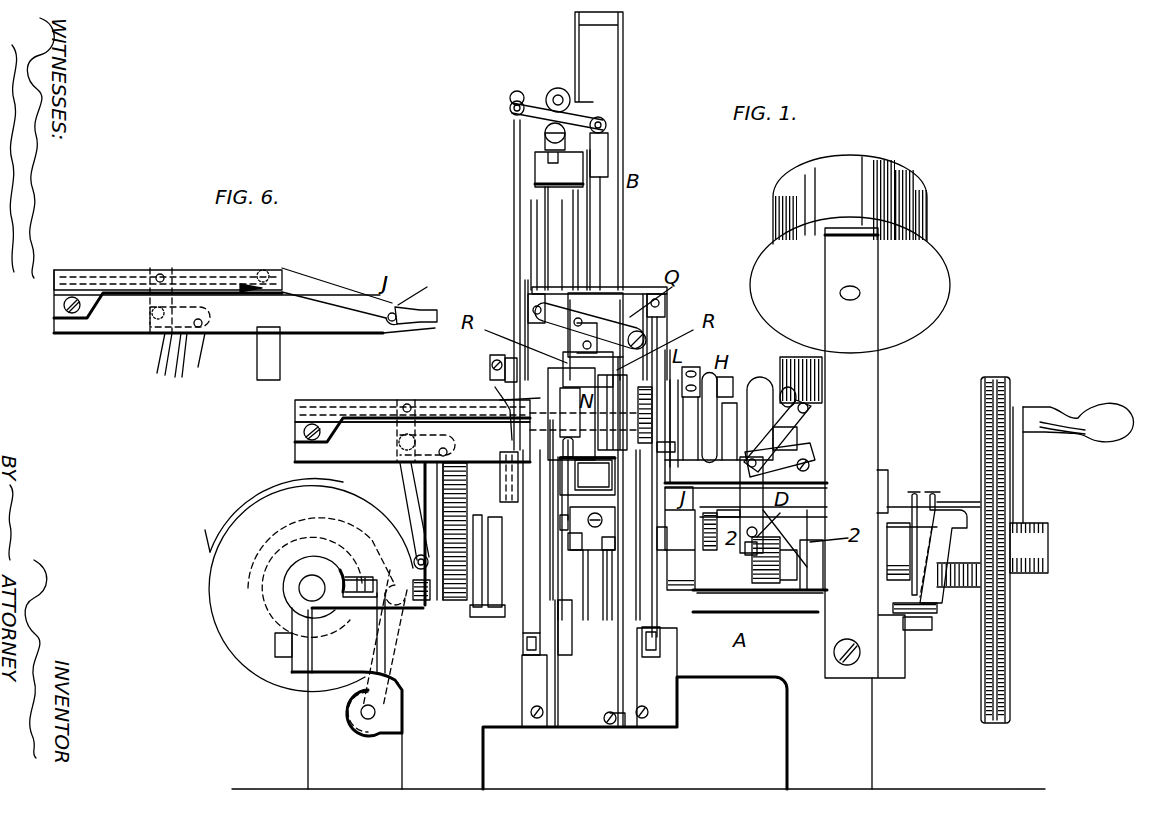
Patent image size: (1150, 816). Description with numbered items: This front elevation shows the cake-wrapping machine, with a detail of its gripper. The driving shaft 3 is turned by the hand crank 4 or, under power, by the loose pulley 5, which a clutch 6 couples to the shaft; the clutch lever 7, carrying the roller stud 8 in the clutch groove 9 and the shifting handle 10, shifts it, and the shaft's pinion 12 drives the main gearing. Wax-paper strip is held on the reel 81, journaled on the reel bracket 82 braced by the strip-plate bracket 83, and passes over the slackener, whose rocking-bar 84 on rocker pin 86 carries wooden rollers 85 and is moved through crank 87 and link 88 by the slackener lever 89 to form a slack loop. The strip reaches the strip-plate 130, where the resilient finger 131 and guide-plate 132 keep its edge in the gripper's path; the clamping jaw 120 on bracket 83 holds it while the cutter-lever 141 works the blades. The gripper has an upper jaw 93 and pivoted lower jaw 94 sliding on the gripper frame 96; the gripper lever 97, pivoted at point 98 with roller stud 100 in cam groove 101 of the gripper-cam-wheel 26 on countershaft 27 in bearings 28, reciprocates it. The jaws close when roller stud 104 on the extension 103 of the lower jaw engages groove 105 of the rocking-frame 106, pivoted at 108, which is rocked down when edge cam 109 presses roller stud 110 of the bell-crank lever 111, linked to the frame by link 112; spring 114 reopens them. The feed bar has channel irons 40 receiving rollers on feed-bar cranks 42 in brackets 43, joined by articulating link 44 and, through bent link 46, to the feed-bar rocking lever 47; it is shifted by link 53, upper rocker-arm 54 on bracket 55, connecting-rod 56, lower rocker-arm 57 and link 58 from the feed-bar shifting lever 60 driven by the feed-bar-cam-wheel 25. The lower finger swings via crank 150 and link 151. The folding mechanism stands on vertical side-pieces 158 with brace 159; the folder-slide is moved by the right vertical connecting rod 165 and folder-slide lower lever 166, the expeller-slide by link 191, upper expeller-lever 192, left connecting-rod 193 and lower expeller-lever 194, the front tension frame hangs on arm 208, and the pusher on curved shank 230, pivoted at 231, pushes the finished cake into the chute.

In FIG. 6, the rocking-frame 106 is at (117, 269).
In FIG. 1, the rocking-frame 106 is at (495, 399).
In FIG. 6, the groove 105 is at (193, 274).
In FIG. 6, the roller stud 104 is at (264, 268).
In FIG. 6, the integral extension 103 is at (312, 283).
In FIG. 6, the upper jaw 93 is at (428, 310).
In FIG. 1, the upper jaw 93 is at (428, 310).
In FIG. 6, the lower jaw 94 is at (409, 336).
In FIG. 1, the lower jaw 94 is at (418, 336).
In FIG. 6, the pivot 108 is at (64, 306).
In FIG. 1, the pivot 108 is at (304, 432).
In FIG. 6, the link 112 is at (160, 293).
In FIG. 1, the link 112 is at (407, 420).
In FIG. 6, the spring 114 is at (247, 288).
In FIG. 1, the spring 114 is at (507, 462).
In FIG. 6, the gripper frame 96 is at (215, 341).
In FIG. 1, the gripper frame 96 is at (435, 441).
In FIG. 6, the gripper lever 97 is at (173, 350).
In FIG. 1, the gripper lever 97 is at (372, 682).
In FIG. 6, the bell-crank lever 111 is at (197, 350).
In FIG. 1, the bell-crank lever 111 is at (380, 507).
In FIG. 1, the gripper-cam-wheel 26 is at (242, 570).
In FIG. 1, the edge cam 109 is at (267, 490).
In FIG. 1, the countershaft 27 is at (306, 590).
In FIG. 1, the bearings 28 is at (297, 600).
In FIG. 1, the cam groove 101 is at (297, 547).
In FIG. 1, the roller stud 100 is at (378, 555).
In FIG. 1, the pivot point 98 is at (361, 712).
In FIG. 1, the arm 208 is at (610, 413).
In FIG. 1, the feed-bar-cam-wheel 25 is at (430, 510).
In FIG. 1, the feed-bar shifting lever 60 is at (440, 588).
In FIG. 1, the roller stud 110 is at (470, 600).
In FIG. 1, the crank 150 is at (480, 575).
In FIG. 1, the feed-bar rocking lever 47 is at (512, 600).
In FIG. 1, the link 151 is at (458, 660).
In FIG. 1, the bracket 55 is at (575, 100).
In FIG. 1, the upper rocker-arm 54 is at (537, 107).
In FIG. 1, the brackets 43 is at (563, 147).
In FIG. 1, the feed-bar cranks 42 is at (537, 163).
In FIG. 1, the channel irons 40 is at (607, 160).
In FIG. 1, the articulating link 44 is at (548, 210).
In FIG. 1, the link 53 is at (597, 215).
In FIG. 1, the brace 159 is at (573, 288).
In FIG. 1, the connecting-rod 56 is at (518, 235).
In FIG. 1, the vertical side-pieces 158 is at (557, 297).
In FIG. 1, the upper expeller-lever 192 is at (587, 330).
In FIG. 1, the link 191 is at (583, 328).
In FIG. 1, the left connecting-rod 193 is at (570, 363).
In FIG. 1, the lower rocker-arm 57 is at (492, 363).
In FIG. 1, the link 58 is at (490, 360).
In FIG. 1, the bent link 46 is at (498, 387).
In FIG. 1, the cutter-lever 141 is at (553, 483).
In FIG. 1, the lower expeller-lever 194 is at (528, 642).
In FIG. 1, the curved pusher shank 230 is at (617, 640).
In FIG. 1, the pivot 231 is at (607, 717).
In FIG. 1, the right vertical connecting rod 165 is at (657, 593).
In FIG. 1, the folder-slide lower lever 166 is at (650, 647).
In FIG. 1, the clamping jaw 120 is at (680, 538).
In FIG. 1, the guide-plate 132 is at (694, 365).
In FIG. 1, the anti-friction rollers 85 is at (760, 380).
In FIG. 1, the strip-plate 130 is at (740, 337).
In FIG. 1, the finger 131 is at (800, 360).
In FIG. 1, the rocking-bar 84 is at (800, 418).
In FIG. 1, the strip-plate bracket 83 is at (925, 455).
In FIG. 1, the crank 87 is at (793, 447).
In FIG. 1, the rocker pin 86 is at (820, 470).
In FIG. 1, the link 88 is at (765, 510).
In FIG. 1, the pinion 12 is at (767, 570).
In FIG. 1, the slackener lever 89 is at (783, 540).
In FIG. 1, the driving shaft 3 is at (883, 547).
In FIG. 1, the reel bracket 82 is at (857, 368).
In FIG. 1, the reel 81 is at (808, 197).
In FIG. 1, the clutch 6 is at (909, 500).
In FIG. 1, the clutch groove 9 is at (927, 497).
In FIG. 1, the shifting handle 10 is at (960, 528).
In FIG. 1, the roller stud 8 is at (920, 600).
In FIG. 1, the clutch lever 7 is at (910, 615).
In FIG. 1, the loose pulley 5 is at (995, 477).
In FIG. 1, the crank 4 is at (1073, 415).